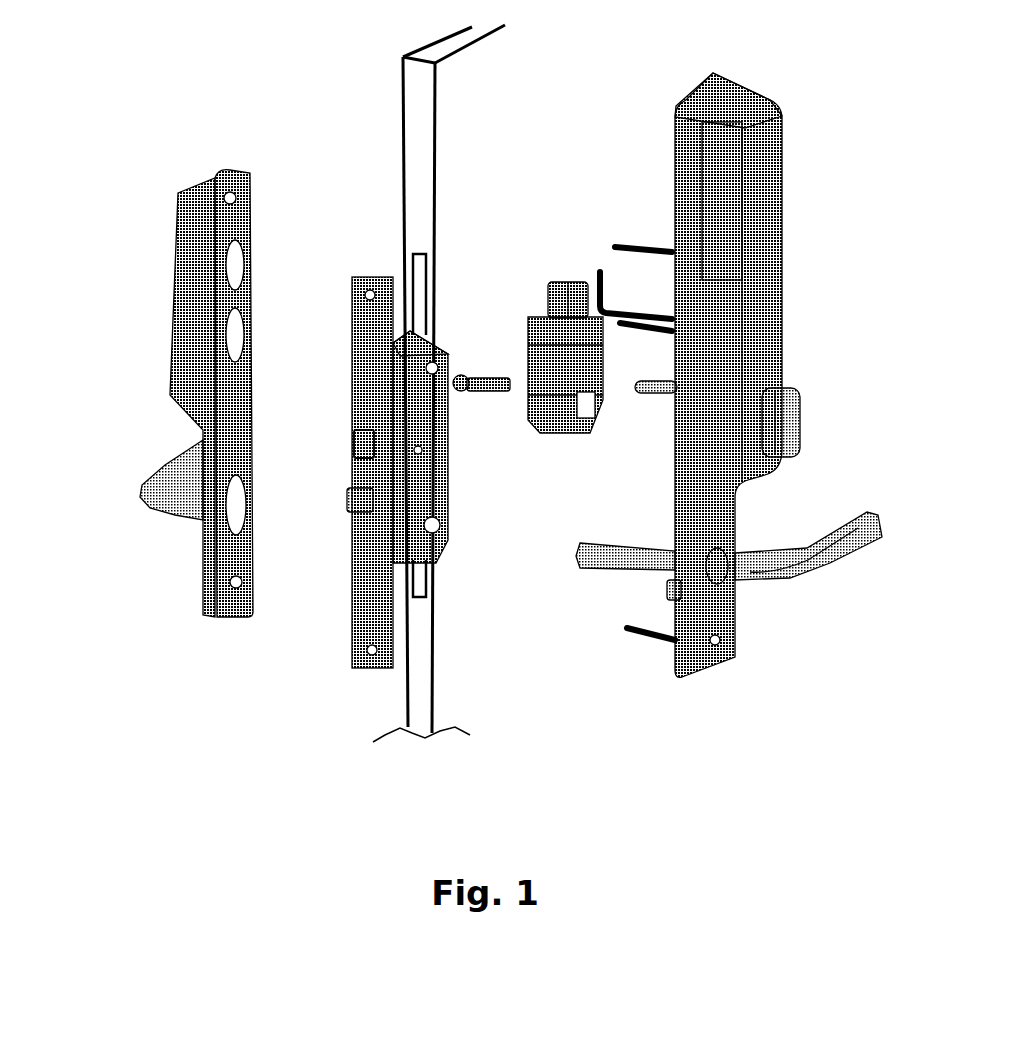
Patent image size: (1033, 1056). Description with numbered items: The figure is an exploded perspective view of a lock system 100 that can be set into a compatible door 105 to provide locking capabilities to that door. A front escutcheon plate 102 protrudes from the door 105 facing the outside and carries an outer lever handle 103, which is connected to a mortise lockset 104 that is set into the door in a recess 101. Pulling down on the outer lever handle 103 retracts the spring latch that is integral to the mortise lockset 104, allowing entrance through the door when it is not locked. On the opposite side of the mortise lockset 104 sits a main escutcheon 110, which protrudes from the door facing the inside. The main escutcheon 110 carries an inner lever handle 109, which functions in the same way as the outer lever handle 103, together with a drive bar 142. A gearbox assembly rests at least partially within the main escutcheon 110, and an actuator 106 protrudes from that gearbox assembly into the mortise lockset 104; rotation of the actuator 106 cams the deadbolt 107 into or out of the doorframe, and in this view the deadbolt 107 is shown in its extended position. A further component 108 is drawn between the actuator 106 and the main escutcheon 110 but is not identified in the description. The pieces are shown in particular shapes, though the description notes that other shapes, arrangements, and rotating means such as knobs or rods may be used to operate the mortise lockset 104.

The lock system 100 is at (101, 116).
The recess 101 is at (416, 277).
The front escutcheon plate 102 is at (200, 586).
The outer lever handle 103 is at (135, 493).
The mortise lockset 104 is at (352, 546).
The door 105 is at (403, 96).
The actuator 106 is at (490, 372).
The deadbolt 107 is at (353, 435).
The lock cylinder 108 is at (558, 275).
The inner lever handle 109 is at (874, 514).
The main escutcheon 110 is at (737, 652).
The drive bar 142 is at (791, 393).